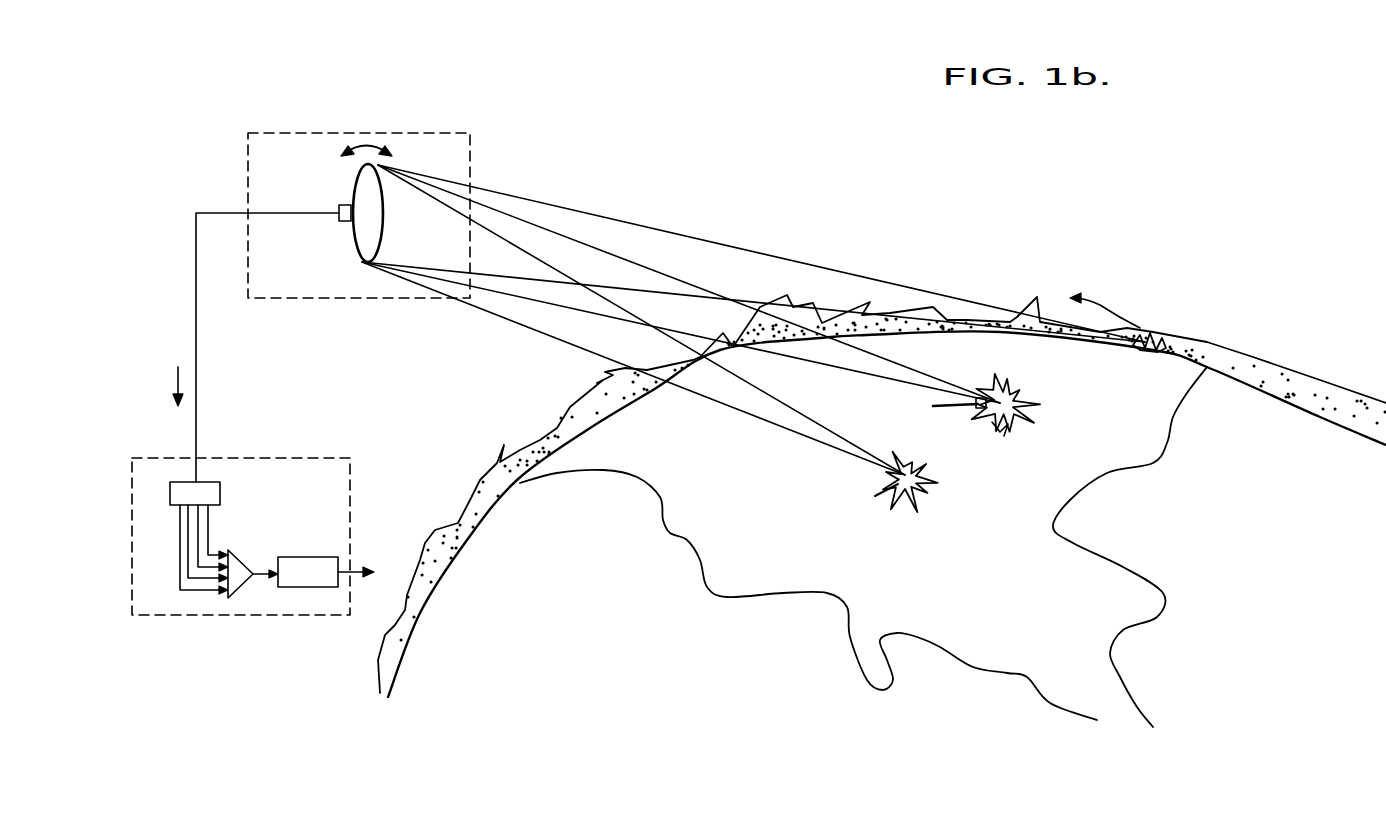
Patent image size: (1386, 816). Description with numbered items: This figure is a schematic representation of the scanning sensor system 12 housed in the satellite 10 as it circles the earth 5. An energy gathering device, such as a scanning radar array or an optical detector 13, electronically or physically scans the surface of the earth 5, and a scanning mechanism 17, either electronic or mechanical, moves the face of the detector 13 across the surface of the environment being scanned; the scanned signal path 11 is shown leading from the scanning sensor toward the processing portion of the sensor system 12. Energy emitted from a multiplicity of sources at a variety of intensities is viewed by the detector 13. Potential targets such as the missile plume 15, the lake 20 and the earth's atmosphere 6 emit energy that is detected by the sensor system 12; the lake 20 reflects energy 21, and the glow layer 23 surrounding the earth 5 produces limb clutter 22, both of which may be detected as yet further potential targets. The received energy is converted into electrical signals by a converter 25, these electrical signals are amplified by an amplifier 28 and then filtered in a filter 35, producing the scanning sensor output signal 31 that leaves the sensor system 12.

The earth 5 is at (514, 661).
The earth's atmosphere 6 is at (482, 468).
The satellite 10 is at (233, 351).
The signal path 11 is at (240, 200).
The scanning sensor system 12 is at (295, 458).
The detector 13 is at (381, 167).
The missile plume 15 is at (920, 507).
The scanning mechanism 17 is at (340, 205).
The lake 20 is at (1045, 400).
The reflected energy 21 is at (1000, 437).
The limb clutter 22 is at (1140, 328).
The glow layer 23 is at (1153, 335).
The converter 25 is at (220, 484).
The amplifier 28 is at (244, 584).
The scanning sensor output signal 31 is at (368, 579).
The filter 35 is at (279, 557).